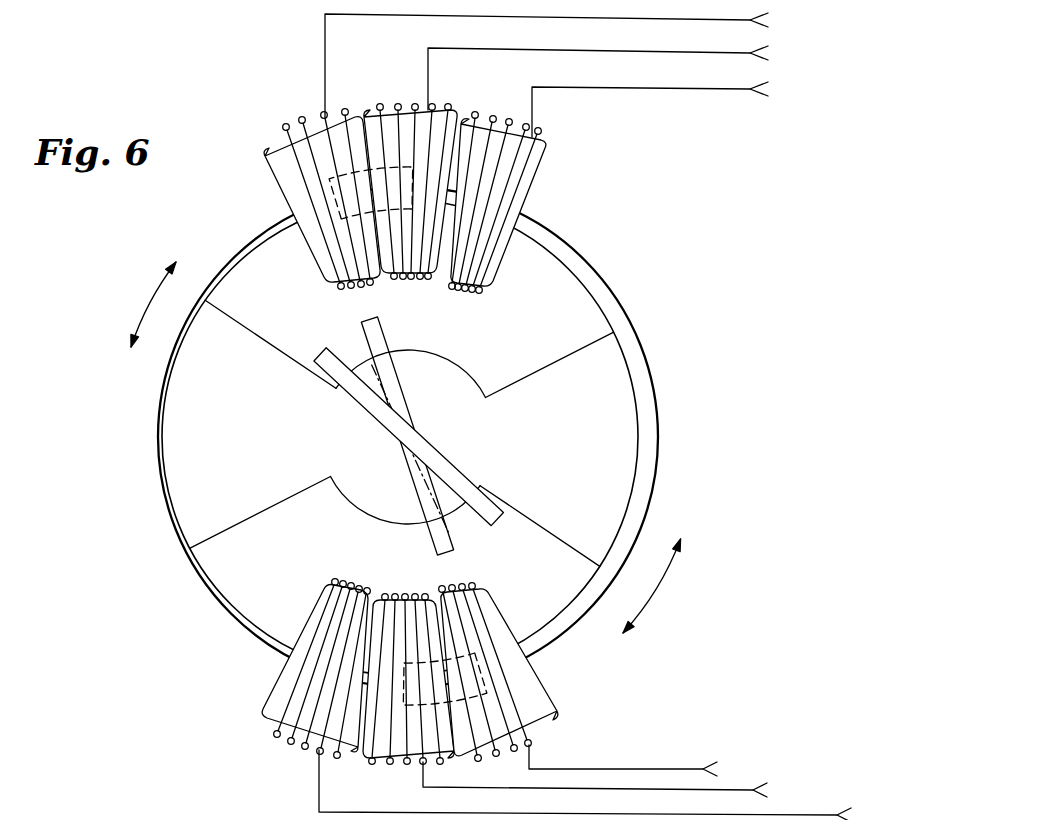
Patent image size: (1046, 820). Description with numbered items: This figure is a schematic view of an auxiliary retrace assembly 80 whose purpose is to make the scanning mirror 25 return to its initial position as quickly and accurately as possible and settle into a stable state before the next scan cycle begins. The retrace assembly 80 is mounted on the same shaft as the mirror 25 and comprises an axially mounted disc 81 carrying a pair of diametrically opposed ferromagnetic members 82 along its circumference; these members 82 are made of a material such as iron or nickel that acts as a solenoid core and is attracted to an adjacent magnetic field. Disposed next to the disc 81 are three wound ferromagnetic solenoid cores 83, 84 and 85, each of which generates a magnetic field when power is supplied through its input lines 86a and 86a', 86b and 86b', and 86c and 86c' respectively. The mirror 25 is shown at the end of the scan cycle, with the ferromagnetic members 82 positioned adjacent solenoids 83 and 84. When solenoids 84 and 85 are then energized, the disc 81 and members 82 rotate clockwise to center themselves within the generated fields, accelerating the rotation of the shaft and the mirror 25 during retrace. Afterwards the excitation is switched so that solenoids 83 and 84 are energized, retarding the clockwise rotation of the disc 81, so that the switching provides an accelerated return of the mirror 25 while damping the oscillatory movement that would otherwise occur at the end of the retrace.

The mirror 25 is at (452, 472).
The retrace assembly 80 is at (652, 348).
The disc 81 is at (637, 433).
The ferromagnetic members 82 is at (335, 190).
The solenoid core 83 is at (285, 130).
The solenoid core 84 is at (383, 109).
The solenoid core 85 is at (540, 138).
The input line 86a is at (589, 59).
The input line 86b is at (641, 73).
The input line 86c is at (692, 104).
The input line 86a' is at (596, 785).
The input line 86b' is at (618, 771).
The input line 86c' is at (638, 747).